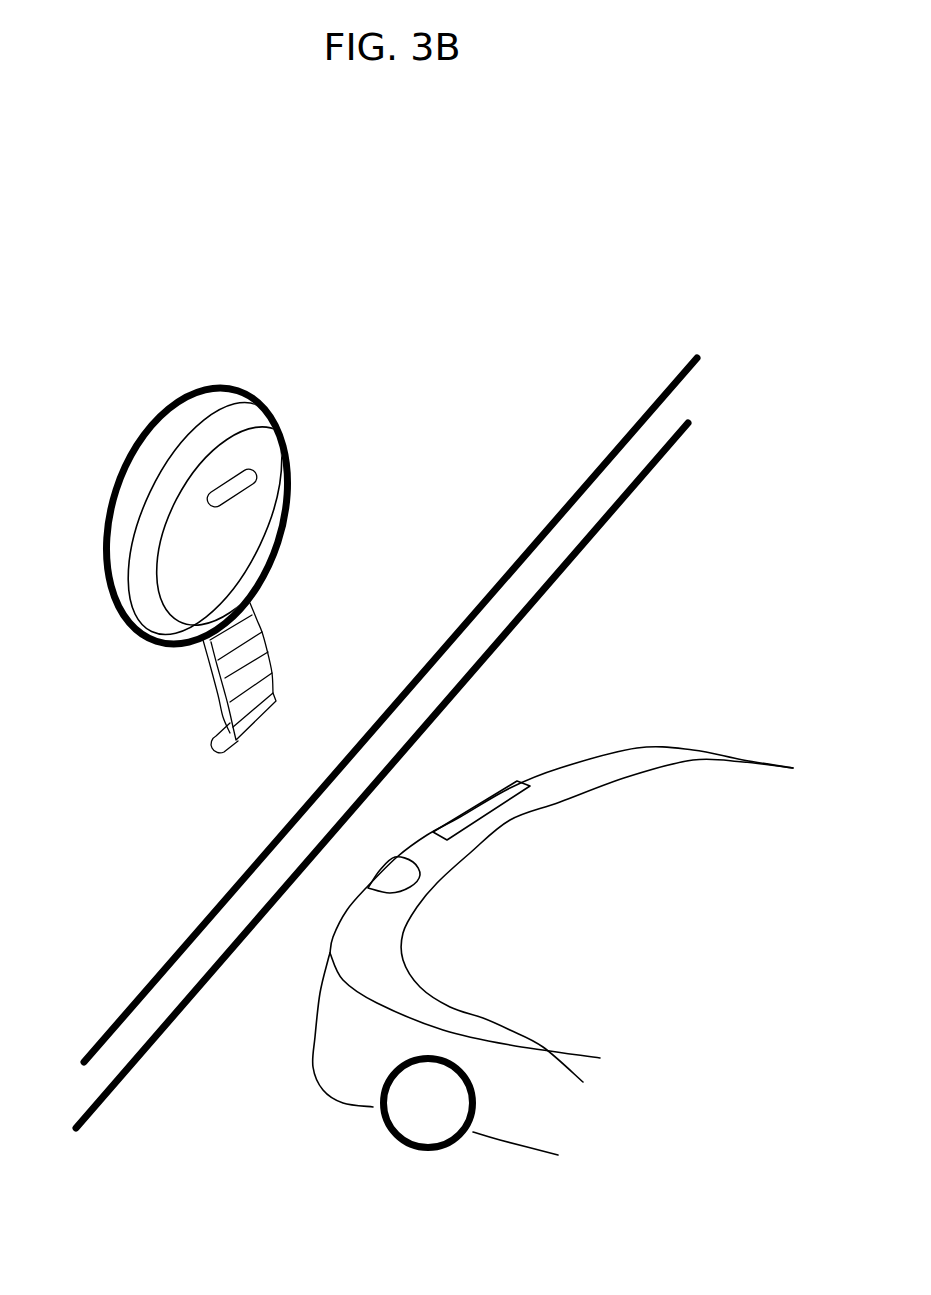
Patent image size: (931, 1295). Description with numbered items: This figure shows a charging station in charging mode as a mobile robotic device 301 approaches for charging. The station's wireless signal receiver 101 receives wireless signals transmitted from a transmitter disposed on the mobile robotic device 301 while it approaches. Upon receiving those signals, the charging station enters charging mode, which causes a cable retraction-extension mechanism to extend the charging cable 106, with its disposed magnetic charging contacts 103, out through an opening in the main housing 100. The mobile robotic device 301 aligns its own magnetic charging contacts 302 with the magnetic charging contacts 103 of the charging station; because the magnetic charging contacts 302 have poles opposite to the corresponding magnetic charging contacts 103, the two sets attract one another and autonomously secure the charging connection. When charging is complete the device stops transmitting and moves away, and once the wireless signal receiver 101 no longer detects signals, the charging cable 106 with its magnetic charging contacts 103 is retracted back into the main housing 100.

The main housing 100 is at (213, 382).
The wireless signal receiver 101 is at (262, 470).
The magnetic charging contacts 103 is at (222, 755).
The charging cable 106 is at (268, 638).
The mobile robotic device 301 is at (382, 868).
The magnetic charging contacts 302 is at (478, 797).